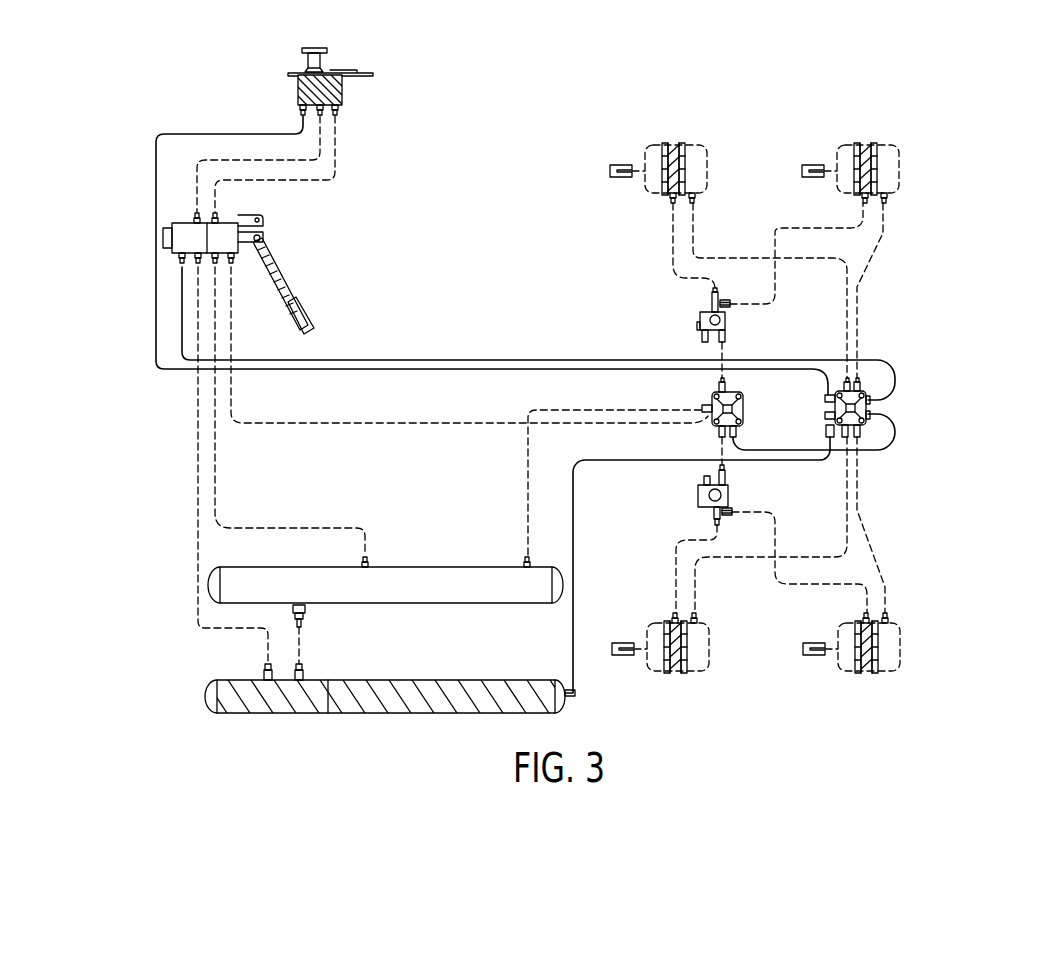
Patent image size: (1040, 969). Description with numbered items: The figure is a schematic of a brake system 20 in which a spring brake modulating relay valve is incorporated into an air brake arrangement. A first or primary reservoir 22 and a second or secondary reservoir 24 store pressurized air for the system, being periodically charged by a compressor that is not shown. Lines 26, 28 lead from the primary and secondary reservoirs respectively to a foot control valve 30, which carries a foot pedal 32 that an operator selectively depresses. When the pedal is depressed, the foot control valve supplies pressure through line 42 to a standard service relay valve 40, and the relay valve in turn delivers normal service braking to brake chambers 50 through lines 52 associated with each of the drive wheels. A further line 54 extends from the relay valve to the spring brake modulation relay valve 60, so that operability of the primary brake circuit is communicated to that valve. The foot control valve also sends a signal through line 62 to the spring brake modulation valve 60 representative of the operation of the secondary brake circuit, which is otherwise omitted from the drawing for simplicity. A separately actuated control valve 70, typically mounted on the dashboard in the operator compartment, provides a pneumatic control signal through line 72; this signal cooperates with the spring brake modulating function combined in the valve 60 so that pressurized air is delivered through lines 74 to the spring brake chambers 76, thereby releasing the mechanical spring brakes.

The brake system 20 is at (548, 150).
The first or primary reservoir 22 is at (462, 603).
The second or secondary reservoir 24 is at (428, 715).
The line 26 is at (292, 523).
The line 28 is at (195, 537).
The foot control valve 30 is at (313, 268).
The foot pedal 32 is at (272, 287).
The service relay valve 40 is at (702, 428).
The line 42 is at (345, 420).
The brake chambers 50 is at (672, 142).
The lines 52 is at (805, 227).
The line 54 is at (797, 450).
The spring brake modulation relay valve 60 is at (912, 400).
The line 62 is at (410, 359).
The control valve 70 is at (343, 55).
The line 72 is at (153, 186).
The lines 74 is at (738, 255).
The spring brake chambers 76 is at (698, 143).